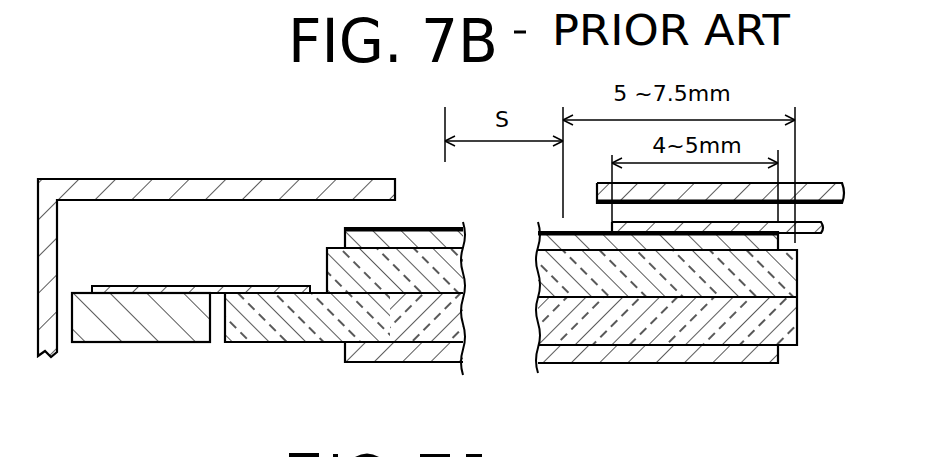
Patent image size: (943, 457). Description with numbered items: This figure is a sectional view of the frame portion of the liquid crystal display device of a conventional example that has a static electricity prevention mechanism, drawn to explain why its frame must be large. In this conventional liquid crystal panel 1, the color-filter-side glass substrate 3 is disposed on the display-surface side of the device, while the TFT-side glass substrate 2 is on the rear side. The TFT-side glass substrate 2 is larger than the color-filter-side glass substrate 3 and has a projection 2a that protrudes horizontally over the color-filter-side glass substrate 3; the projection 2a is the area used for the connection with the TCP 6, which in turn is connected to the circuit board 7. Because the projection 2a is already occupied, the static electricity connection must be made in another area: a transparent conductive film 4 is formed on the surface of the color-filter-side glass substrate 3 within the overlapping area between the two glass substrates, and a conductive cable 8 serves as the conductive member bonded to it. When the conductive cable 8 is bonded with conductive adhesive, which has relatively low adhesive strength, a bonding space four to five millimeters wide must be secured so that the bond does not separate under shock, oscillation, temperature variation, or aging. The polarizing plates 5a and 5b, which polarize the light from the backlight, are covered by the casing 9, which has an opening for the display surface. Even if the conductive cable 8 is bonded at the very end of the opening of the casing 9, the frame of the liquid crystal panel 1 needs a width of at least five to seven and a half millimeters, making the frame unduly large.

The liquid crystal panel 1 is at (712, 333).
The TFT-side glass substrate 2 is at (663, 326).
The projection 2a is at (268, 324).
The color-filter-side glass substrate 3 is at (341, 258).
The transparent conductive film 4 is at (407, 228).
The polarizing plate 5a is at (753, 356).
The polarizing plate 5b is at (755, 245).
The TCP 6 is at (153, 290).
The circuit board 7 is at (143, 328).
The conductive cable 8 is at (818, 228).
The casing 9 is at (808, 191).